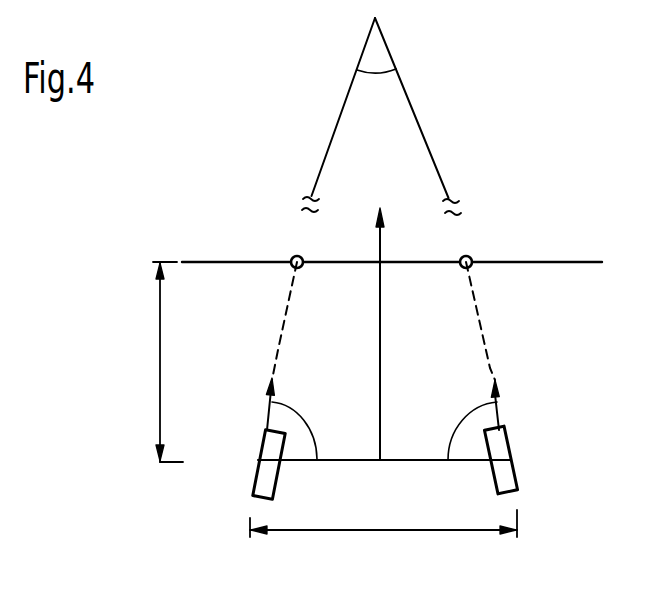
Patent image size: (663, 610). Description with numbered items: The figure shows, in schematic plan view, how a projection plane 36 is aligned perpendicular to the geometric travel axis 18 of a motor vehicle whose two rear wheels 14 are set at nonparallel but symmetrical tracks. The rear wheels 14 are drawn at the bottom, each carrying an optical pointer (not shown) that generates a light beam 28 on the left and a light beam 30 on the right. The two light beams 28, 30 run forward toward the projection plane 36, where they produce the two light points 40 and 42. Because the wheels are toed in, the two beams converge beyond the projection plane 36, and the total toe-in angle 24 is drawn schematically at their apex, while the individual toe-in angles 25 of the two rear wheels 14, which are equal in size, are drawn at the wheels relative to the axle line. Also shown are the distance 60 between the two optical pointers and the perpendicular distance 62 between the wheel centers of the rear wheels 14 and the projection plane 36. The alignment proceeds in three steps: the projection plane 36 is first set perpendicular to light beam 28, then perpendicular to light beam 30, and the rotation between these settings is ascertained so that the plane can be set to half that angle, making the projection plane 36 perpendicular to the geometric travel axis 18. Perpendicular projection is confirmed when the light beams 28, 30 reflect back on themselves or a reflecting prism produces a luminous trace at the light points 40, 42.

The rear wheels 14 is at (262, 478).
The geometric travel axis 18 is at (381, 249).
The total toe-in angle 24 is at (387, 71).
The toe-in angles 25 is at (297, 418).
The light beam 28 is at (277, 348).
The light beam 30 is at (482, 330).
The projection plane 36 is at (582, 262).
The light point 40 is at (296, 258).
The light point 42 is at (476, 254).
The distance 60 is at (372, 530).
The perpendicular distance 62 is at (160, 358).